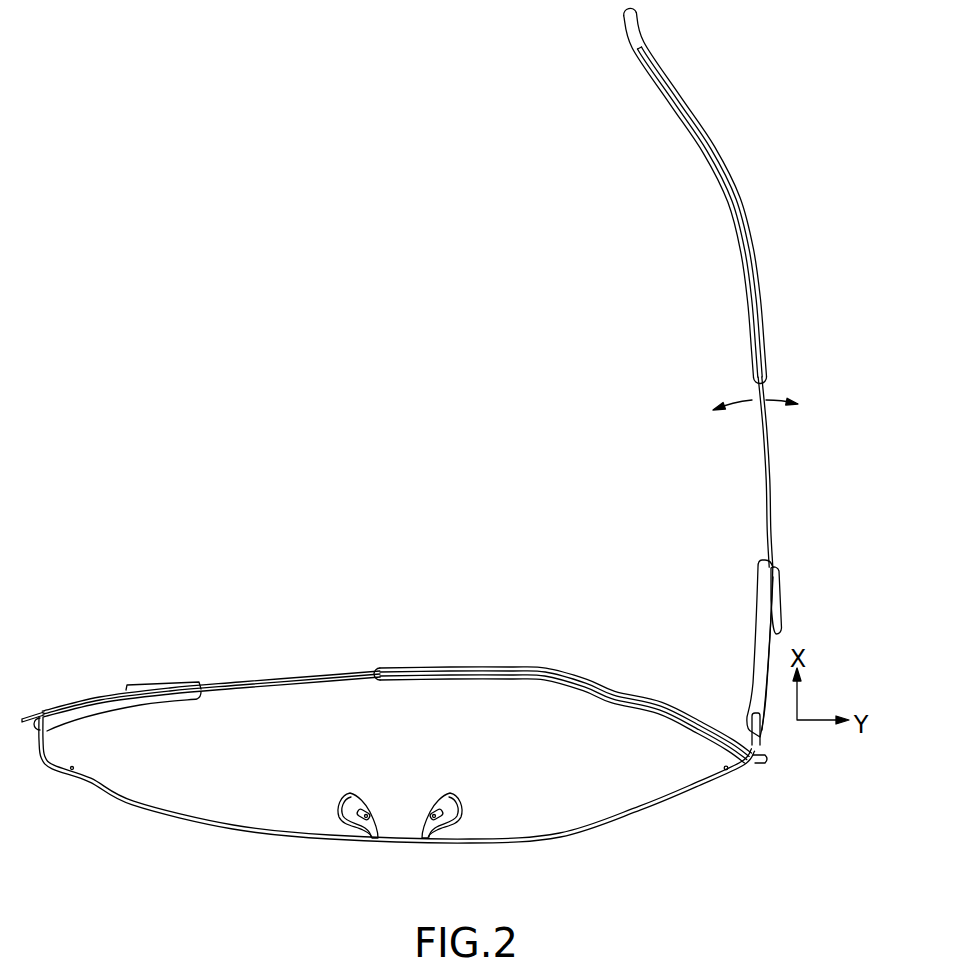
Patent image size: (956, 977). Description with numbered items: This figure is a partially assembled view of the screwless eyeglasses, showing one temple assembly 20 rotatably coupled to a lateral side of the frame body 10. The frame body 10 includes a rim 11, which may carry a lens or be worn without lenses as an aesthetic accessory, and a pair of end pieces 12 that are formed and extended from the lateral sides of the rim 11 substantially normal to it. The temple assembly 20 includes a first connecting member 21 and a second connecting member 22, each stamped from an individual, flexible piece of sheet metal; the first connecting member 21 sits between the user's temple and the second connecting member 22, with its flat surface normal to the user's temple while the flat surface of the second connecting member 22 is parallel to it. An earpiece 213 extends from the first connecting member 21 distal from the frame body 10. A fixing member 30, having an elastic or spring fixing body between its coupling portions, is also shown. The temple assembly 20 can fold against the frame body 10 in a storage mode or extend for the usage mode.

The frame body 10 is at (156, 825).
The rim 11 is at (330, 838).
The end piece 12 is at (764, 749).
The temple assembly 20 is at (337, 660).
The first connecting member 21 is at (753, 672).
The second connecting member 22 is at (767, 500).
The earpiece 213 is at (734, 220).
The fixing member 30 is at (724, 768).